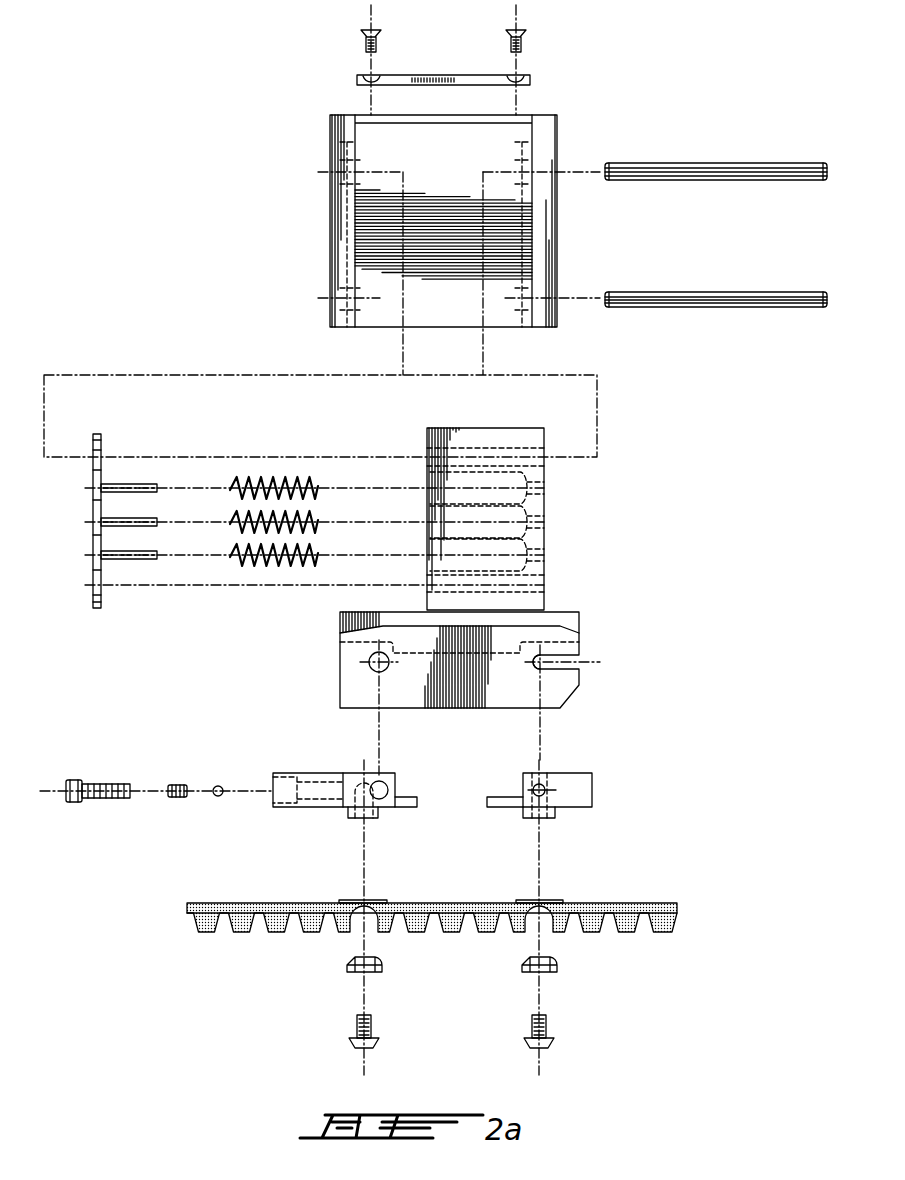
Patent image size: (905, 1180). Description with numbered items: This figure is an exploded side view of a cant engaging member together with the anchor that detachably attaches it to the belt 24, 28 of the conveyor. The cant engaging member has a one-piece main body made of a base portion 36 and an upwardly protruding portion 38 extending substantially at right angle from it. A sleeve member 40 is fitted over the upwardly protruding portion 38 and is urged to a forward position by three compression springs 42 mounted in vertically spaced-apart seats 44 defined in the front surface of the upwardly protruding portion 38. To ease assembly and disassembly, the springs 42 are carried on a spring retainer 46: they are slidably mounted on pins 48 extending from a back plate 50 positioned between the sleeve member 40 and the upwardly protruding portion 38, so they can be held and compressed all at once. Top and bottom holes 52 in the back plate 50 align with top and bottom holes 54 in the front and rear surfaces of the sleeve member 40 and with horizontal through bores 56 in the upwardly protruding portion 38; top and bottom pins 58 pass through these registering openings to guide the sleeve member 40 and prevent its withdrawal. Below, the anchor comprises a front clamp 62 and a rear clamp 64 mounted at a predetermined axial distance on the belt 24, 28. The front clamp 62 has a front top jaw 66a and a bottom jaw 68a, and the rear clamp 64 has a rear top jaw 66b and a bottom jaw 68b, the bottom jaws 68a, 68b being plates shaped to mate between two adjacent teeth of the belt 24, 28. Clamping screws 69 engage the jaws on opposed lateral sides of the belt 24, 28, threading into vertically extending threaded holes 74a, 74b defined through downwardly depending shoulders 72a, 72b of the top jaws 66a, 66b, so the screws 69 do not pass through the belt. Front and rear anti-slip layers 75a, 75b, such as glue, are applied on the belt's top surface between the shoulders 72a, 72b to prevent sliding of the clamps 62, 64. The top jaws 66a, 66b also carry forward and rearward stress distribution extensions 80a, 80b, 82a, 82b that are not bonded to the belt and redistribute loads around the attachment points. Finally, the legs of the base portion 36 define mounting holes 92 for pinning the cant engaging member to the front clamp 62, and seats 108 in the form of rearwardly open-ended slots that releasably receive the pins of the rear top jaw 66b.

The belt 24 is at (484, 926).
The belt 28 is at (677, 925).
The base portion 36 is at (492, 681).
The upwardly protruding portion 38 is at (495, 498).
The sleeve member 40 is at (557, 222).
The compression springs 42 is at (243, 565).
The seats 44 is at (440, 562).
The spring retainer 46 is at (96, 534).
The pins 48 is at (138, 560).
The back plate 50 is at (93, 500).
The top and bottom holes 52 is at (130, 428).
The top and bottom holes 54 is at (556, 293).
The horizontal through bores 56 is at (548, 582).
The top and bottom pins 58 is at (712, 292).
The front clamp 62 is at (330, 886).
The rear clamp 64 is at (610, 884).
The front top jaw 66a is at (330, 886).
The rear top jaw 66b is at (592, 884).
The bottom jaw 68a is at (347, 965).
The bottom jaw 68b is at (557, 965).
The clamping screws 69 is at (546, 1028).
The shoulder 72a is at (350, 814).
The shoulder 72b is at (558, 815).
The threaded hole 74a is at (384, 826).
The threaded hole 74b is at (505, 845).
The front anti-slip layer 75a is at (395, 903).
The rear anti-slip layer 75b is at (560, 900).
The forward stress distribution extension 80a is at (290, 808).
The forward stress distribution extension 80b is at (497, 800).
The rearward stress distribution extension 82a is at (410, 805).
The rearward stress distribution extension 82b is at (585, 802).
The mounting holes 92 is at (369, 668).
The seats 108 is at (579, 660).